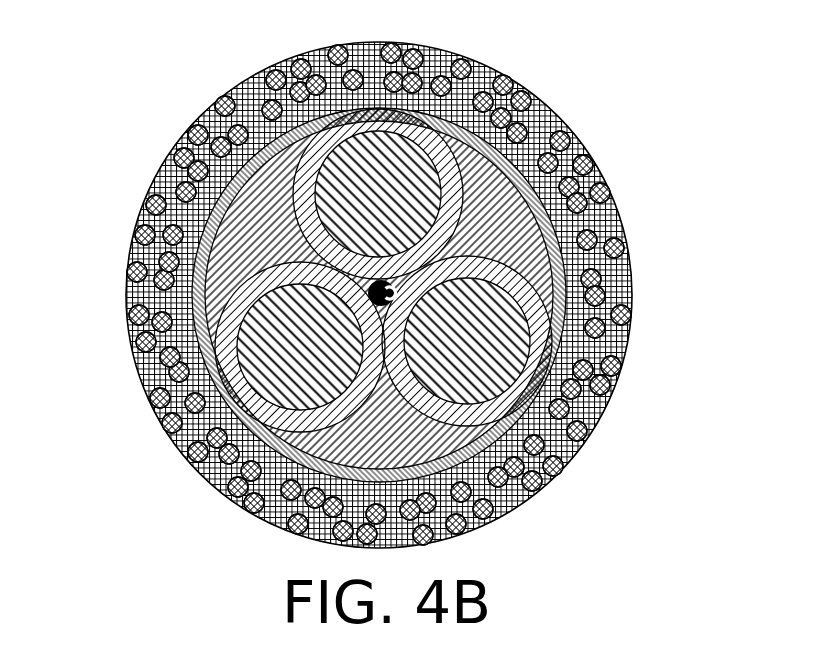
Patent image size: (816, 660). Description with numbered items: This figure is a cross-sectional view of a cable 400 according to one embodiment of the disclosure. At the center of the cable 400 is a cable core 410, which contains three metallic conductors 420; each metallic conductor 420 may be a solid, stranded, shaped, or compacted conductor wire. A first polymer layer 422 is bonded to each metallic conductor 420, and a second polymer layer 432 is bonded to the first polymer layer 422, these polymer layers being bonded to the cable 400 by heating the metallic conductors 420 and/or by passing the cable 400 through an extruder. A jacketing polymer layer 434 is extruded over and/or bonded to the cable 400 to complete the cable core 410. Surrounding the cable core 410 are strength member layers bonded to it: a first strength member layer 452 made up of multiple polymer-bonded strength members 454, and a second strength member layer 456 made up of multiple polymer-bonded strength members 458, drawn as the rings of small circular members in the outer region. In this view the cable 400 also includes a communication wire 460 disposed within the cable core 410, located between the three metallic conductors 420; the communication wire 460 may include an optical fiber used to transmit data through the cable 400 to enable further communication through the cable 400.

The cable 400 is at (126, 36).
The cable core 410 is at (500, 180).
The metallic conductor 420 is at (420, 172).
The first polymer layer 422 is at (453, 165).
The second polymer layer 432 is at (540, 262).
The jacketing polymer layer 434 is at (617, 277).
The first strength member layer 452 is at (190, 129).
The polymer-bonded strength member 454 is at (191, 167).
The second strength member layer 456 is at (138, 229).
The polymer-bonded strength member 458 is at (128, 268).
The communication wire 460 is at (395, 282).